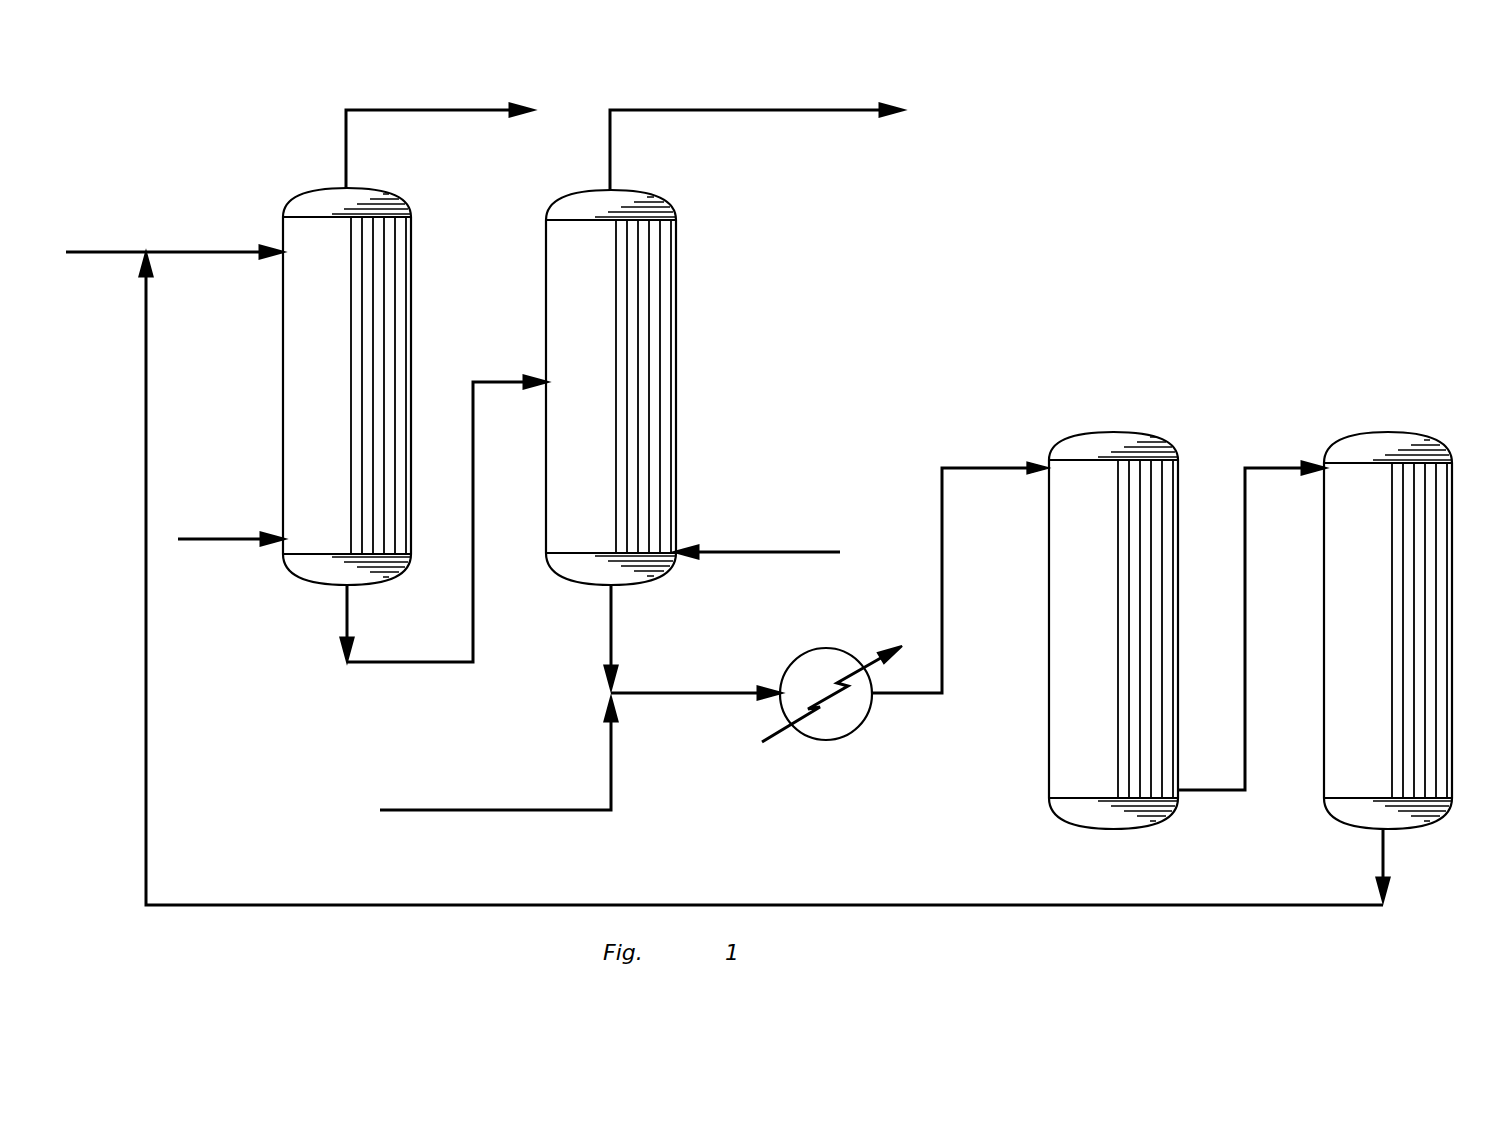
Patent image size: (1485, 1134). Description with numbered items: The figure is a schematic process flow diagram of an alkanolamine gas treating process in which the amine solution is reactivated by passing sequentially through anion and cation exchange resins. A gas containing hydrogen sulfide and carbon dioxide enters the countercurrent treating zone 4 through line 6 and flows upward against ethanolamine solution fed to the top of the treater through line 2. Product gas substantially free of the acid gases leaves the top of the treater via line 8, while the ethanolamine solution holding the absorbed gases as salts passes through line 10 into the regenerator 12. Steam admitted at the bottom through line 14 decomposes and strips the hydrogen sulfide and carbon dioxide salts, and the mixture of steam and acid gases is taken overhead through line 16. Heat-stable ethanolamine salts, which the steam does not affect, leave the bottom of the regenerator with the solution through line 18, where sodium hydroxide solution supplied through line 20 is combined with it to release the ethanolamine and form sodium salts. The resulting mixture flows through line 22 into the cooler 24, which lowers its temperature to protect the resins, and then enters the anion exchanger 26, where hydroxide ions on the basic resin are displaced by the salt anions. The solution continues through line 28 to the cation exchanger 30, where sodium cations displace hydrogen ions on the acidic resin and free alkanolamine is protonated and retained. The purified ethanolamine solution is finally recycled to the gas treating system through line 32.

The line 2 is at (112, 254).
The countercurrent treating zone 4 is at (352, 543).
The line 6 is at (212, 540).
The line 8 is at (342, 147).
The line 10 is at (405, 663).
The regenerator 12 is at (621, 543).
The line 14 is at (773, 553).
The line 16 is at (607, 138).
The line 18 is at (608, 637).
The line 20 is at (612, 745).
The line 22 is at (717, 690).
The cooler 24 is at (875, 707).
The anion exchanger 26 is at (1126, 778).
The line 28 is at (1247, 540).
The cation exchanger 30 is at (1404, 781).
The line 32 is at (1222, 903).